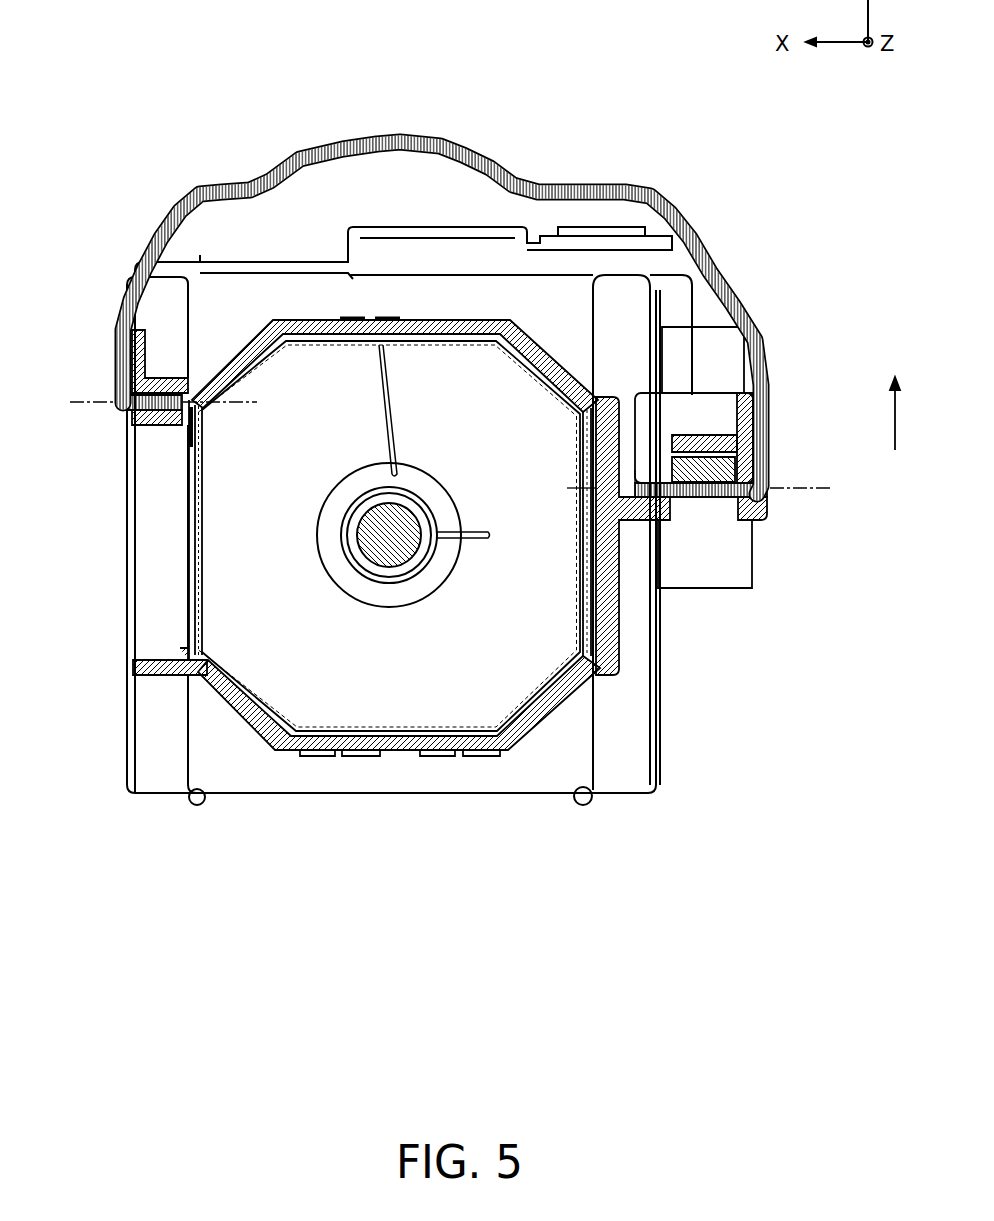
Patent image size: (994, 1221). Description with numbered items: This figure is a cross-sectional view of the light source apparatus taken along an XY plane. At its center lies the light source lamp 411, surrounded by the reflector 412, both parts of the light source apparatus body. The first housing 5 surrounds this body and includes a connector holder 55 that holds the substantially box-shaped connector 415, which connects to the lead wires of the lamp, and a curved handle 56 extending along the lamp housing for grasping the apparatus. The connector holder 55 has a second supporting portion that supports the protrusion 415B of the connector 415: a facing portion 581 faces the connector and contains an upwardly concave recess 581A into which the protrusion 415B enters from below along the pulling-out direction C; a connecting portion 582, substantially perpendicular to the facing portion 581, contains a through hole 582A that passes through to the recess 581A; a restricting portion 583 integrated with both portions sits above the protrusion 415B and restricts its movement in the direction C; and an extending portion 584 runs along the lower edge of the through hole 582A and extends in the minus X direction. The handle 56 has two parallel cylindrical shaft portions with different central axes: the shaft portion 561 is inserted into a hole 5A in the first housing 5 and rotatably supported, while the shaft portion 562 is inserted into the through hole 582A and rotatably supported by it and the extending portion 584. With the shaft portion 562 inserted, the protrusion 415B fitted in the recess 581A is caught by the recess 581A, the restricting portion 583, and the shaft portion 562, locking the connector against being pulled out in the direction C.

The handle 56 is at (595, 181).
The connector holder 55 is at (778, 421).
The facing portion 581 is at (688, 395).
The recess 581A is at (672, 470).
The restricting portion 583 is at (700, 440).
The extending portion 584 is at (637, 517).
The shaft portion 562 is at (695, 498).
The connecting portion 582 is at (755, 513).
The through hole 582A is at (775, 493).
The connector 415 is at (738, 572).
The protrusion 415B is at (672, 472).
The shaft portion 561 is at (120, 407).
The first housing 5 is at (137, 423).
The hole 5A is at (153, 410).
The light source lamp 411 is at (336, 604).
The reflector 412 is at (267, 678).
The pulling-out direction C is at (895, 419).